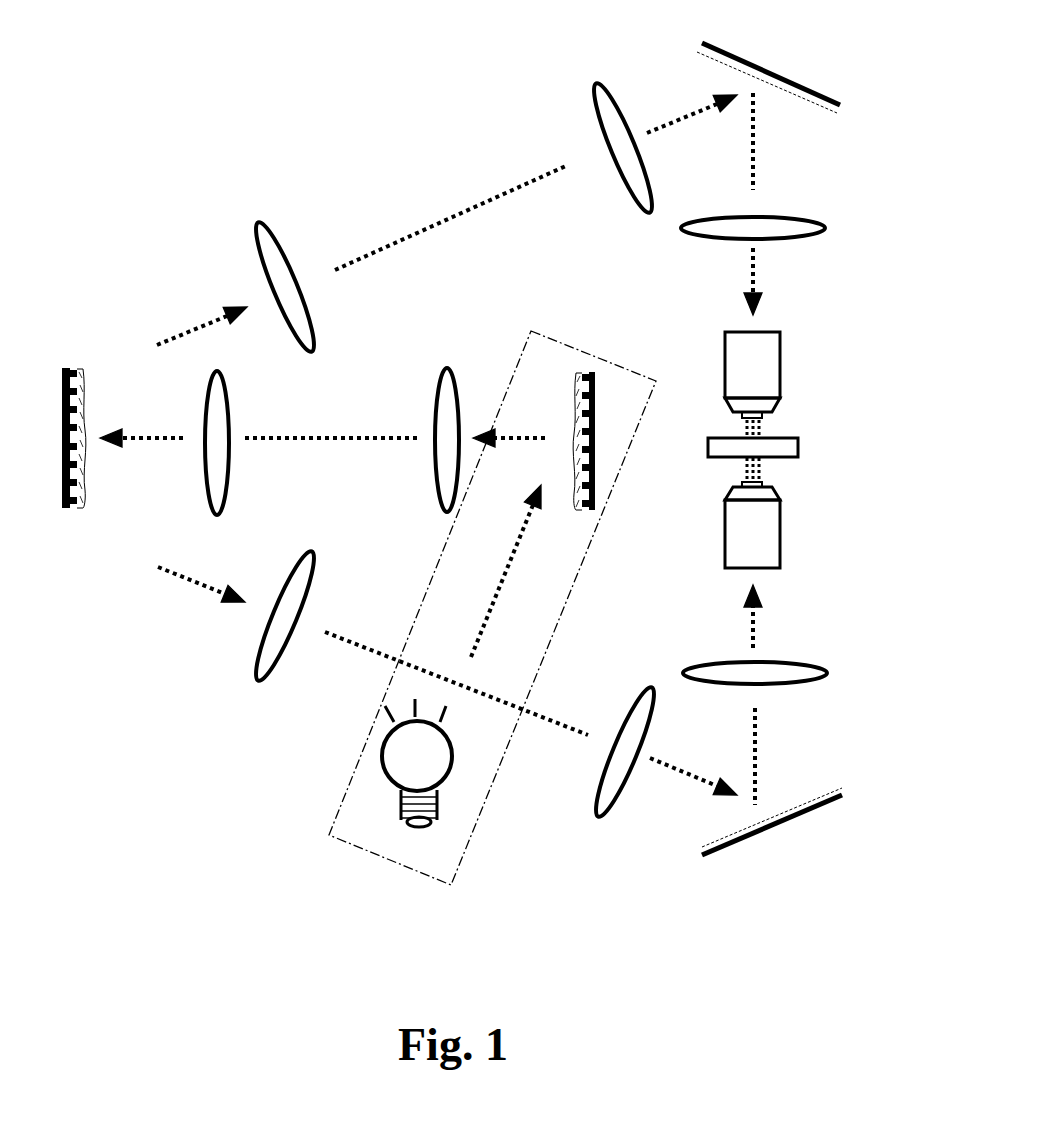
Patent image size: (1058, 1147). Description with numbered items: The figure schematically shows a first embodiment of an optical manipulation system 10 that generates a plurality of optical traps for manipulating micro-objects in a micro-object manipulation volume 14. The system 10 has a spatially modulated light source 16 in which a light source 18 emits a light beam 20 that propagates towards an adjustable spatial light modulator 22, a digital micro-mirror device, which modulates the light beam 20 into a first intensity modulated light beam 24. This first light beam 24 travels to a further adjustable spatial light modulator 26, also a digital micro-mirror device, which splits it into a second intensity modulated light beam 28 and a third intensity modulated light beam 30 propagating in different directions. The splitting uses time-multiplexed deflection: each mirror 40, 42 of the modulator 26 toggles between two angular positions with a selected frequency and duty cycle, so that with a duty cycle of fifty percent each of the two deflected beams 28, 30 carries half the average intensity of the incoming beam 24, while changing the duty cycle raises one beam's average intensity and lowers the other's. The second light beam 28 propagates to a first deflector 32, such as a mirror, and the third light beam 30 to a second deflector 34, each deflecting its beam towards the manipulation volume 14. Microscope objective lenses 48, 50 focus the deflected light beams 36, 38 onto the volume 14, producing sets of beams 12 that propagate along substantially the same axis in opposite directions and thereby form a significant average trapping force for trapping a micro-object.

The optical manipulation system 10 is at (447, 92).
The sets of beams 12 is at (765, 420).
The micro-object manipulation volume 14 is at (742, 437).
The spatially modulated light source 16 is at (492, 608).
The light source 18 is at (388, 786).
The light beam 20 is at (495, 595).
The adjustable spatial light modulator 22 is at (592, 475).
The first intensity modulated light beam 24 is at (365, 437).
The further adjustable spatial light modulator 26 is at (106, 412).
The second intensity modulated light beam 28 is at (188, 330).
The third intensity modulated light beam 30 is at (190, 578).
The first deflector 32 is at (808, 104).
The second deflector 34 is at (808, 800).
The deflected light beam 36 is at (757, 293).
The deflected light beam 38 is at (757, 620).
The mirror 40 is at (85, 480).
The mirror 42 is at (85, 447).
The microscope objective lens 48 is at (780, 378).
The microscope objective lens 50 is at (780, 535).